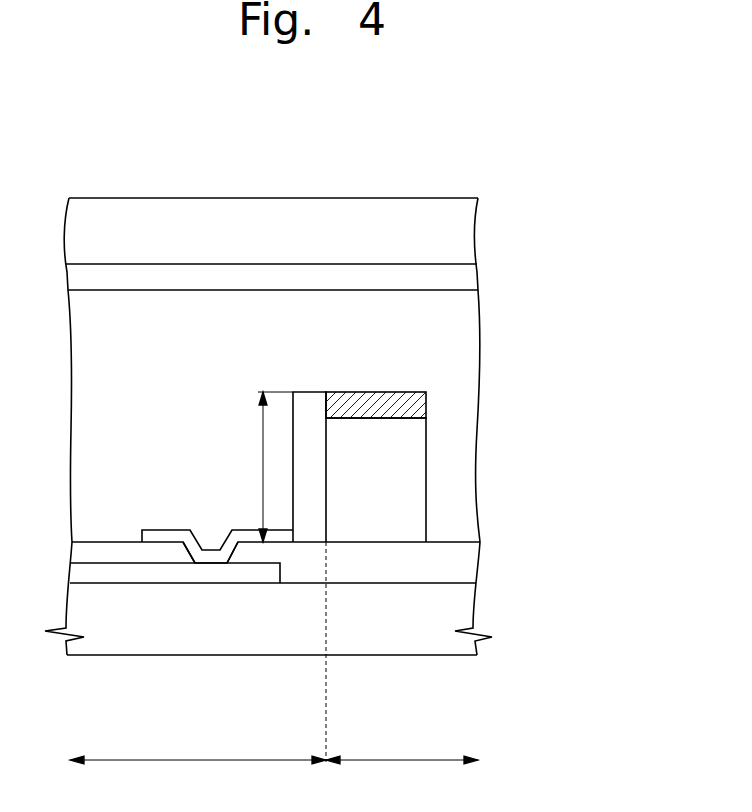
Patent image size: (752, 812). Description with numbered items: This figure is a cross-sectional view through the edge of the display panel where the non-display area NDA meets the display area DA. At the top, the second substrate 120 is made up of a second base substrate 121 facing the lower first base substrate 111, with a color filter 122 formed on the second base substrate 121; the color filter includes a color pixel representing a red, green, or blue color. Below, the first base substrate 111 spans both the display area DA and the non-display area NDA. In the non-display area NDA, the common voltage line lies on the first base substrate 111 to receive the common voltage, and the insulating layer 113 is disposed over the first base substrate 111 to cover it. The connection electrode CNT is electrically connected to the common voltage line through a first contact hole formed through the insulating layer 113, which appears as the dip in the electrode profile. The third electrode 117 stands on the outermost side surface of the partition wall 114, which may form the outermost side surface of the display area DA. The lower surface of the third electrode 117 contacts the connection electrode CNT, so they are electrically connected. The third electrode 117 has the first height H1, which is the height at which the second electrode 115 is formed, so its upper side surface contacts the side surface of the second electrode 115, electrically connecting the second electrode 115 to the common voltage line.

The second substrate 120 is at (560, 221).
The second base substrate 121 is at (455, 231).
The color filter 122 is at (455, 279).
The third electrode 117 is at (310, 402).
The second electrode 115 is at (415, 403).
The partition wall 114 is at (412, 487).
The insulating layer 113 is at (460, 565).
The first base substrate 111 is at (460, 608).
The first height H1 is at (264, 467).
The connection electrode CNT is at (303, 537).
The non-display area NDA is at (198, 772).
The display area DA is at (402, 773).